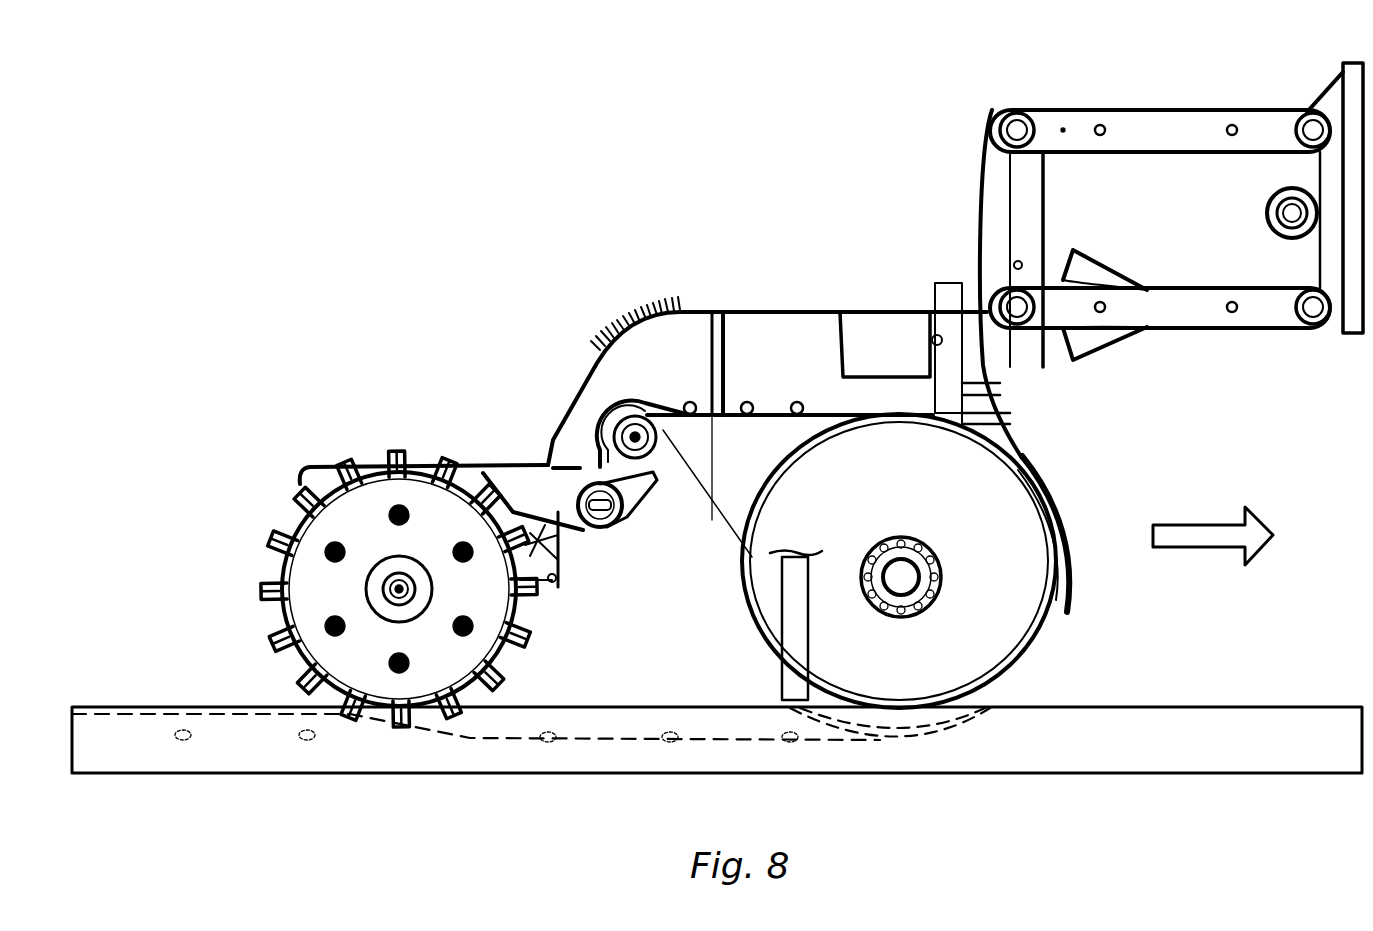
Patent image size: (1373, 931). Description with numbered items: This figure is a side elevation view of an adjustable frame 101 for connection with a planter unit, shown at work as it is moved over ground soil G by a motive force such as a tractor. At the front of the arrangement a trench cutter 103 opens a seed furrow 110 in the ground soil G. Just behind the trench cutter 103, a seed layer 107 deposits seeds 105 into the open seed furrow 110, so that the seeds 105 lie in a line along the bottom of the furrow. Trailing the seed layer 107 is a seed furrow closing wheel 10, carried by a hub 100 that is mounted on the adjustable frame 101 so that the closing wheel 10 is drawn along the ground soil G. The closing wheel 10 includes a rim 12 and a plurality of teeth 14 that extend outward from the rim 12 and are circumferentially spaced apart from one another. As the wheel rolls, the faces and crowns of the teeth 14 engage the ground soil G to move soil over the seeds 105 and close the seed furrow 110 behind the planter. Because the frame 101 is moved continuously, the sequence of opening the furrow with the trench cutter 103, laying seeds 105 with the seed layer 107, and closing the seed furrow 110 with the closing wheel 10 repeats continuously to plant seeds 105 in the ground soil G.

The seed furrow closing wheel 10 is at (389, 538).
The rim 12 is at (293, 515).
The teeth 14 is at (362, 450).
The hub 100 is at (300, 603).
The adjustable frame 101 is at (787, 140).
The trench cutter 103 is at (813, 472).
The seeds 105 is at (555, 725).
The seed layer 107 is at (776, 600).
The seed furrow 110 is at (613, 730).
The ground soil G is at (1188, 722).